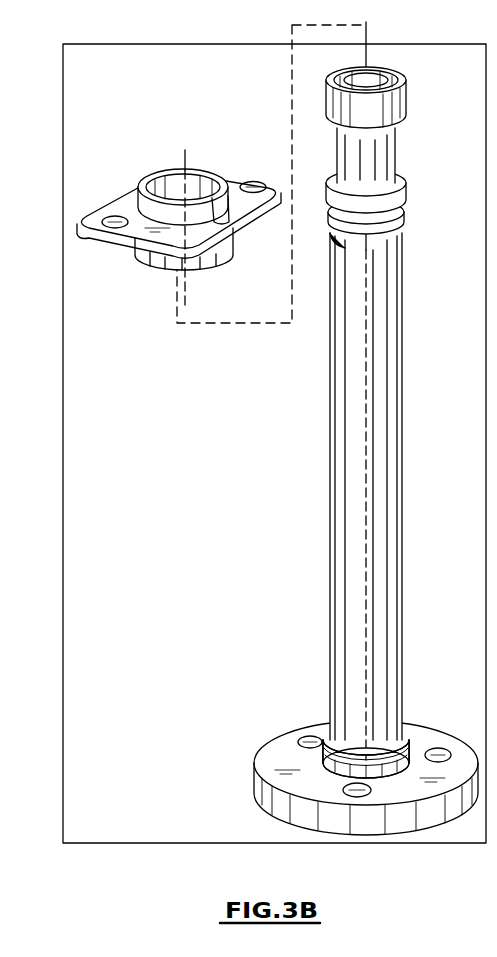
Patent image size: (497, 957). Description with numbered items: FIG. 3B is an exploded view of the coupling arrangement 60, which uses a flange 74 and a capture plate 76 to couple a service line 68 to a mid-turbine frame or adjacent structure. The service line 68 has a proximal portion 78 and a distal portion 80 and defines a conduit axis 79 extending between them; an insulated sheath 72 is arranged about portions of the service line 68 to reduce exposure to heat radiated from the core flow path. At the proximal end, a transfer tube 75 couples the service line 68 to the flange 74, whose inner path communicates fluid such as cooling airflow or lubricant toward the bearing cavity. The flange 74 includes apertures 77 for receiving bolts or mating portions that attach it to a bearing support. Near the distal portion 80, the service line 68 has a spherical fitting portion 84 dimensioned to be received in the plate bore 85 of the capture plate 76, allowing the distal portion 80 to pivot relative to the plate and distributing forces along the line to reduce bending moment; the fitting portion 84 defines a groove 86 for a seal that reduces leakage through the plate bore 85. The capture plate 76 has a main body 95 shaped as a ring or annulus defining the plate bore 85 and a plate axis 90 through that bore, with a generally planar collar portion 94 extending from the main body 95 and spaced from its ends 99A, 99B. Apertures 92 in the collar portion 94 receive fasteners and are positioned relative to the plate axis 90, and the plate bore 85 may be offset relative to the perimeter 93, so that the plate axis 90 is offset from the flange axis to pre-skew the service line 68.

The coupling arrangement 60 is at (106, 56).
The capture plate 76 is at (121, 148).
The end of main body 99A is at (204, 168).
The end of main body 99B is at (148, 266).
The plate axis 90 is at (185, 150).
The main body 95 is at (203, 175).
The plate bore 85 is at (221, 178).
The apertures 92 is at (113, 216).
The perimeter 93 is at (78, 231).
The collar portion 94 is at (97, 230).
The service line 68 is at (365, 400).
The insulated sheath 72 is at (402, 332).
The conduit axis 79 is at (367, 393).
The distal portion 80 is at (392, 162).
The fitting portion 84 is at (407, 190).
The groove 86 is at (402, 208).
The proximal portion 78 is at (403, 710).
The transfer tube 75 is at (407, 730).
The flange 74 is at (248, 774).
The apertures 77 is at (312, 738).